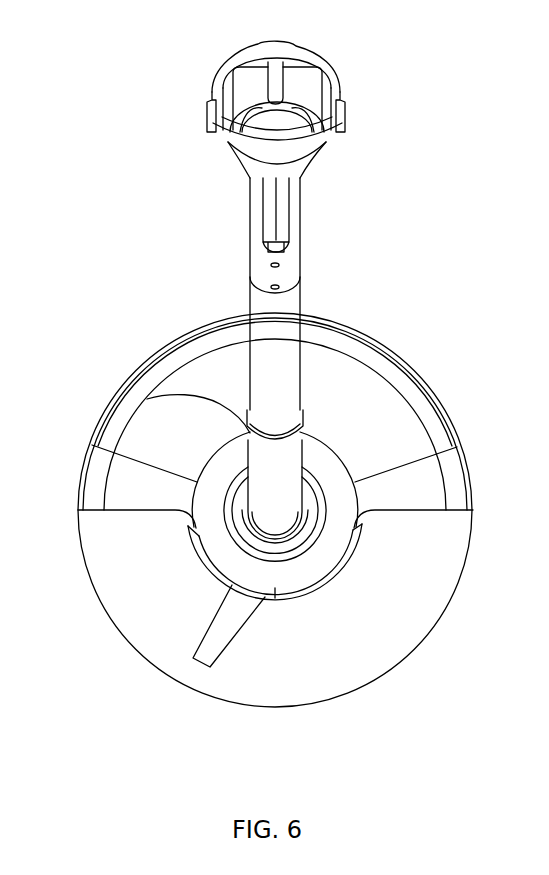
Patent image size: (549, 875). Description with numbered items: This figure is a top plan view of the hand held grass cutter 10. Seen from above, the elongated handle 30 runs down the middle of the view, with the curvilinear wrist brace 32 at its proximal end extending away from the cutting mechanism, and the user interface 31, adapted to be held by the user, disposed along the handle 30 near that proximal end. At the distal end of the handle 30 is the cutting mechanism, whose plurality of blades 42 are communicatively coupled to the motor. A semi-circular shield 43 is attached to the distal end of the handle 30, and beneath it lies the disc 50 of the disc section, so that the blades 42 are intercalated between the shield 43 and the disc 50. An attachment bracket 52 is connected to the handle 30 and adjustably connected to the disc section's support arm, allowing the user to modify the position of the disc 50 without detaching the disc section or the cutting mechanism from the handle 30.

The hand held grass cutter 10 is at (108, 179).
The elongated handle 30 is at (332, 300).
The user interface 31 is at (282, 226).
The curvilinear wrist brace 32 is at (305, 92).
The shield 43 is at (375, 392).
The disc 50 is at (370, 631).
The attachment bracket 52 is at (147, 399).
The blades 42 is at (218, 637).